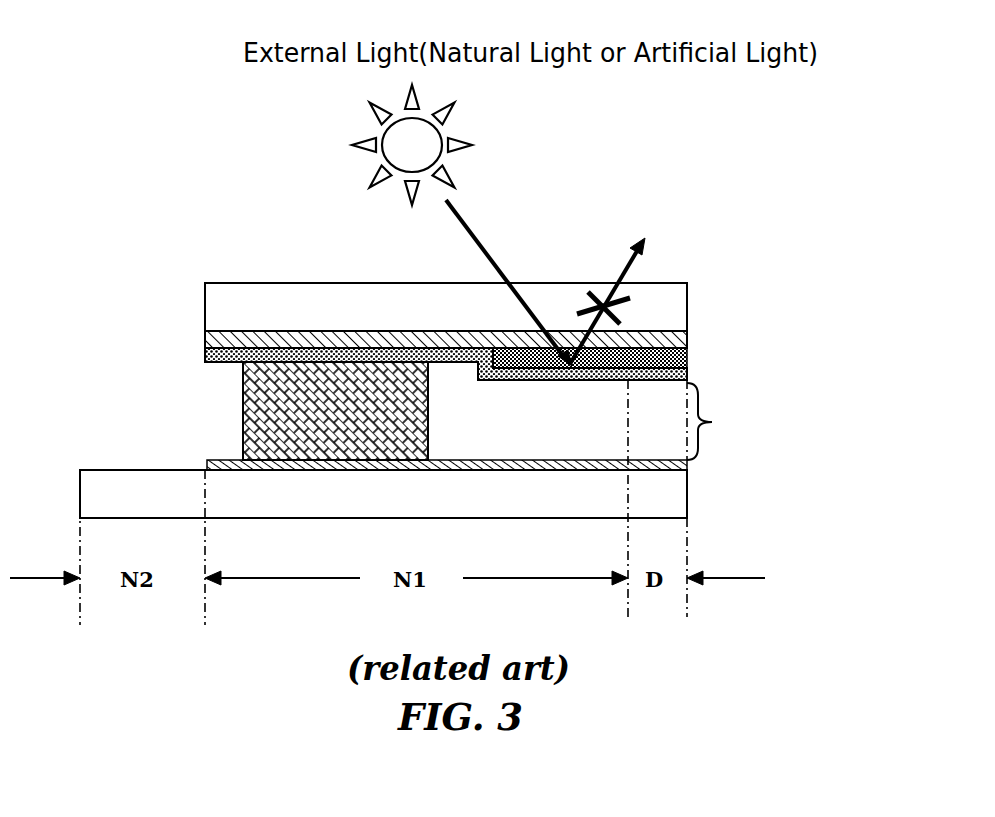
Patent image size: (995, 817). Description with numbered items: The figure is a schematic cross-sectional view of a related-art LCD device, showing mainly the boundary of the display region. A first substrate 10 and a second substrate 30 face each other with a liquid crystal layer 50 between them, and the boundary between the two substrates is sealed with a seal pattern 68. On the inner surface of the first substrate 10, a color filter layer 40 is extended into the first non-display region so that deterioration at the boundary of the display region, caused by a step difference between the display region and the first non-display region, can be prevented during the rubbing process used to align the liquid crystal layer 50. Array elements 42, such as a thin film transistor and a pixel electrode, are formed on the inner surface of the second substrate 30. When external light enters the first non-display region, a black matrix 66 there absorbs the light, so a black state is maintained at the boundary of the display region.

The first substrate 10 is at (482, 322).
The black matrix 66 is at (687, 336).
The color filter layer 40 is at (687, 357).
The seal pattern 68 is at (255, 410).
The array elements 42 is at (513, 460).
The second substrate 30 is at (467, 509).
The liquid crystal layer 50 is at (720, 421).